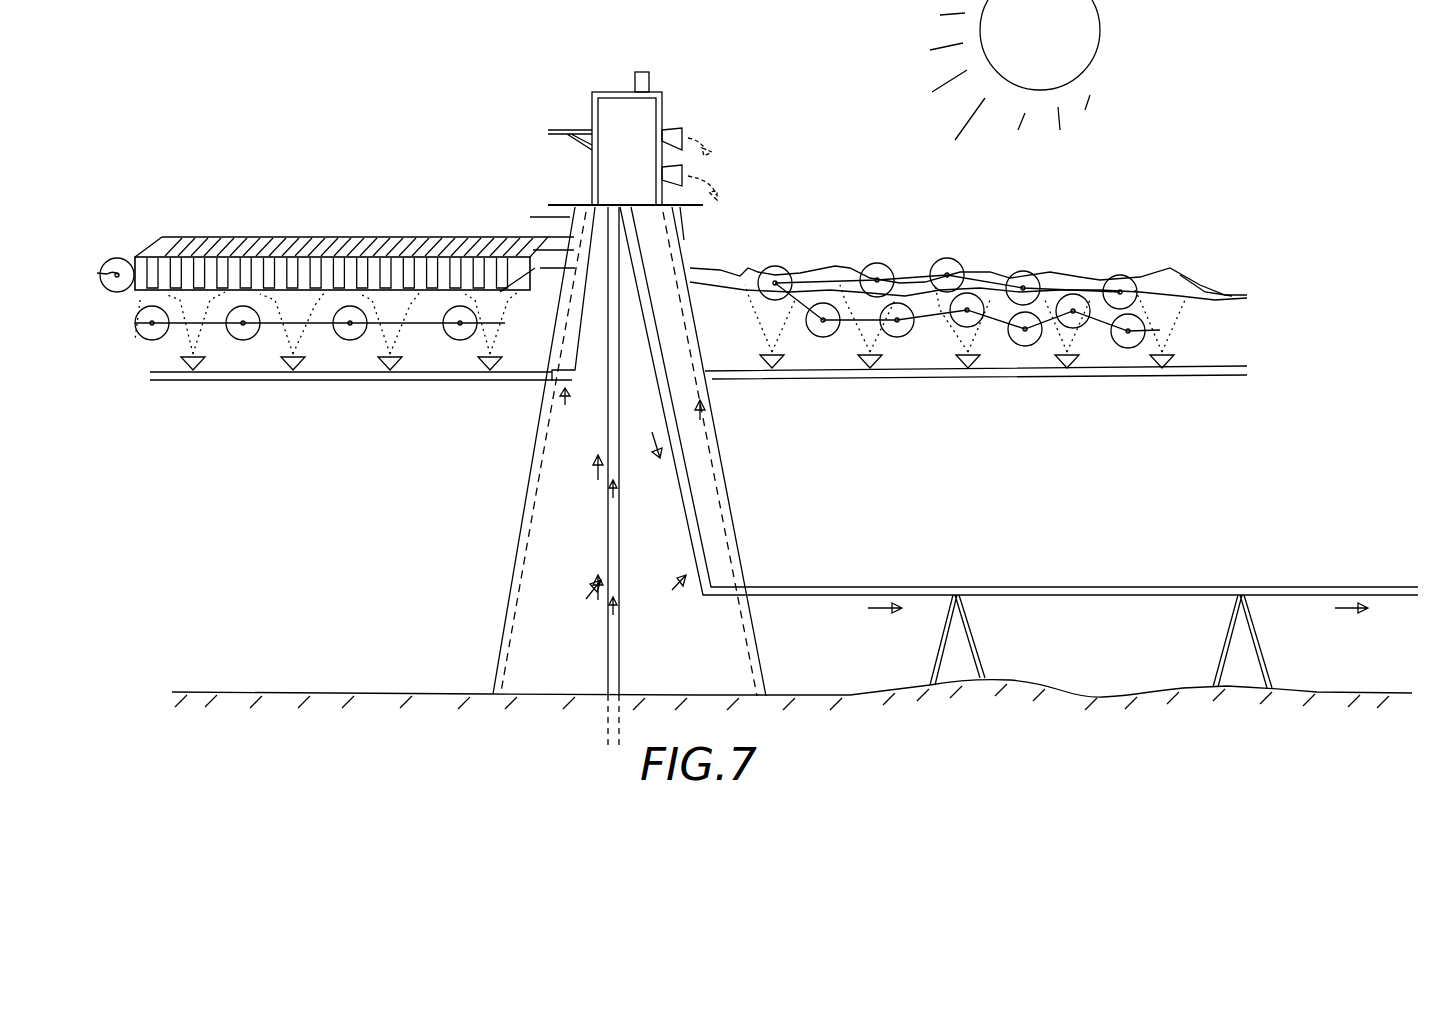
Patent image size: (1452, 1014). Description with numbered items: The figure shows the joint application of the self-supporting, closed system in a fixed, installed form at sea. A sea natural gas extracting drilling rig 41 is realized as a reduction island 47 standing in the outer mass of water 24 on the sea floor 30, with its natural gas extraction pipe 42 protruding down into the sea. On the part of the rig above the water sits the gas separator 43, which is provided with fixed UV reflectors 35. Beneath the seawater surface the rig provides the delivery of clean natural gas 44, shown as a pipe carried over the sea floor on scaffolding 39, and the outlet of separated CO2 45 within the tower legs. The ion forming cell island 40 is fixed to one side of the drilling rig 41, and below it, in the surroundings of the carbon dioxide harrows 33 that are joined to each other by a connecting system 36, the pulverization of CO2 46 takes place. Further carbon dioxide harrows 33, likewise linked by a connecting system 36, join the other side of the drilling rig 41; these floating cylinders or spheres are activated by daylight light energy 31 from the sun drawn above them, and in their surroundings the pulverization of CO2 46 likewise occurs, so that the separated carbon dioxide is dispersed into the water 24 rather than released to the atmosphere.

The outer mass of water 24 is at (698, 425).
The sea floor 30 is at (375, 697).
The daylight light energy 31 is at (1014, 152).
The carbon dioxide harrow 33 is at (878, 265).
The UV reflectors 35 is at (693, 122).
The connecting system 36 is at (805, 270).
The scaffolding 39 is at (760, 645).
The ion forming cell island 40 is at (225, 220).
The sea natural gas extracting drilling rig 41 is at (570, 217).
The natural gas extraction pipe 42 is at (629, 476).
The gas separator 43 is at (614, 115).
The delivery of clean natural gas 44 is at (1117, 607).
The outlet of separated CO2 45 is at (632, 417).
The pulverization of CO2 46 is at (153, 350).
The reduction island 47 is at (1132, 267).